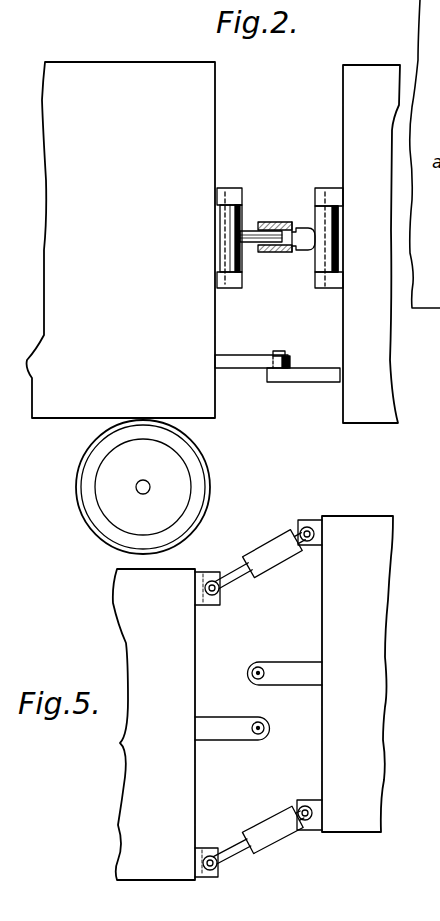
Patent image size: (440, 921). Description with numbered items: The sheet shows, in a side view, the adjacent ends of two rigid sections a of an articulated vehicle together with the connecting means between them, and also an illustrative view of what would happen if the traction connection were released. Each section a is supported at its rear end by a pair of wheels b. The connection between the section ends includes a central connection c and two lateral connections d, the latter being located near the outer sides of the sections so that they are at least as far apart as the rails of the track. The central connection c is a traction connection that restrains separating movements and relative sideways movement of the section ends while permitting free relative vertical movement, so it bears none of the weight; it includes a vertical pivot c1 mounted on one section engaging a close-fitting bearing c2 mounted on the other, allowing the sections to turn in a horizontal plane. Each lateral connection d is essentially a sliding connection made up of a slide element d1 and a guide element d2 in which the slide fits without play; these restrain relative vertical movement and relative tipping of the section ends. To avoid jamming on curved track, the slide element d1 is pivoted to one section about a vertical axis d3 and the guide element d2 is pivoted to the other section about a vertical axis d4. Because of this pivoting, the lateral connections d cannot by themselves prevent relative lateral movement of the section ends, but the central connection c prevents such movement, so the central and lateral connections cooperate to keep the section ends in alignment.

In FIG. 2, the rigid section a is at (213, 242).
In FIG. 5, the rigid section a is at (253, 698).
In FIG. 2, the wheel b is at (143, 487).
In FIG. 2, the central connection c is at (270, 386).
In FIG. 5, the central connection c is at (261, 690).
In FIG. 2, the vertical pivot c1 is at (280, 351).
In FIG. 5, the vertical pivot c1 is at (259, 668).
In FIG. 2, the bearing c2 is at (291, 362).
In FIG. 5, the bearing c2 is at (270, 728).
In FIG. 2, the lateral connection d is at (270, 208).
In FIG. 5, the lateral connection d is at (273, 530).
In FIG. 2, the slide element d1 is at (267, 250).
In FIG. 5, the slide element d1 is at (234, 584).
In FIG. 2, the guide element d2 is at (285, 228).
In FIG. 5, the guide element d2 is at (279, 560).
In FIG. 2, the vertical axis d3 is at (232, 190).
In FIG. 5, the vertical axis d3 is at (213, 580).
In FIG. 2, the vertical axis d4 is at (325, 190).
In FIG. 5, the vertical axis d4 is at (309, 528).